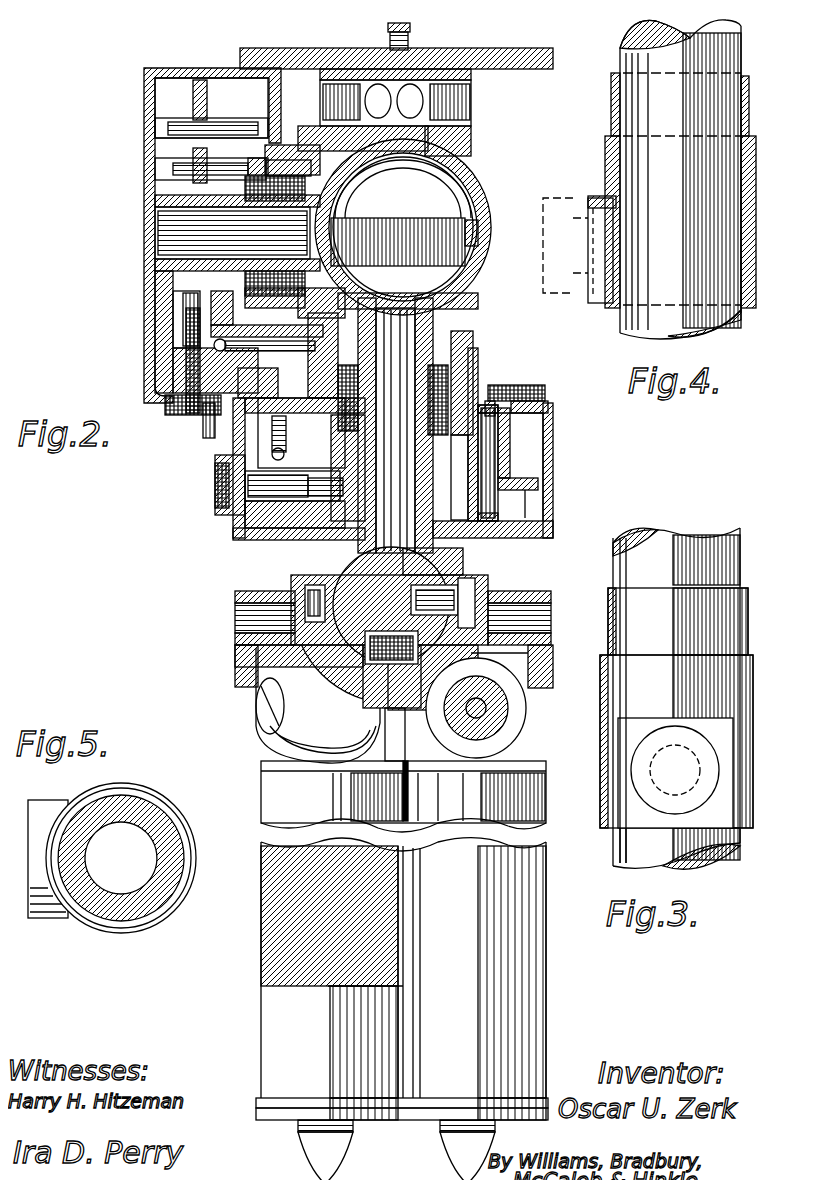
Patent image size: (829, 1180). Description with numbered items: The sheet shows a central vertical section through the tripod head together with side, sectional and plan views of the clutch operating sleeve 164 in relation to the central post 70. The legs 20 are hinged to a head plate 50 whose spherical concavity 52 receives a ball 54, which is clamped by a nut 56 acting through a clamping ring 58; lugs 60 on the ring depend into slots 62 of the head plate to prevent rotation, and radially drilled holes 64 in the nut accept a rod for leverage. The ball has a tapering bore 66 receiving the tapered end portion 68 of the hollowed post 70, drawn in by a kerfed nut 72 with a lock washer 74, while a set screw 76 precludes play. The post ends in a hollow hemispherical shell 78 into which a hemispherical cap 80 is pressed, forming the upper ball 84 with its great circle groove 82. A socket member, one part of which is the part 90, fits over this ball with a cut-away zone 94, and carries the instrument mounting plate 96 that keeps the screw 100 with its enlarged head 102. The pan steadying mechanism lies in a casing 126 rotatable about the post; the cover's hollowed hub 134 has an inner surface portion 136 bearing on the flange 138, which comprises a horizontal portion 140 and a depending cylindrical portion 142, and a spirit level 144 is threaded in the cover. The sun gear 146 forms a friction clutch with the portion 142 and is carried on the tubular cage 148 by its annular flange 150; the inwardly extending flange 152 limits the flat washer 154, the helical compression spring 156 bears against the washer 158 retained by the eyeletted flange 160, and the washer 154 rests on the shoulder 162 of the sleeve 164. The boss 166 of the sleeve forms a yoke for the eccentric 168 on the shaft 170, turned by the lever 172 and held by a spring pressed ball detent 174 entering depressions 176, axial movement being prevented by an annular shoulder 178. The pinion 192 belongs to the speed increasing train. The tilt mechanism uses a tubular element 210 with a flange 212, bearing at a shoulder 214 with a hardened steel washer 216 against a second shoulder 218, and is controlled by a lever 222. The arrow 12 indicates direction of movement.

In FIG. 2, the direction arrow 12 is at (235, 35).
In FIG. 2, the legs 20 is at (253, 972).
In FIG. 2, the head plate 50 is at (330, 650).
In FIG. 2, the spherical concavity 52 is at (480, 588).
In FIG. 2, the ball 54 is at (300, 575).
In FIG. 2, the nut 56 is at (225, 655).
In FIG. 2, the clamping ring 58 is at (462, 575).
In FIG. 2, the lugs 60 is at (300, 590).
In FIG. 2, the slots 62 is at (235, 612).
In FIG. 2, the radially drilled holes 64 is at (232, 595).
In FIG. 2, the tapering bore 66 is at (345, 570).
In FIG. 2, the tapered end portion 68 is at (430, 555).
In FIG. 2, the hollowed post 70 is at (440, 320).
In FIG. 2, the kerfed nut 72 is at (335, 670).
In FIG. 2, the lock washer 74 is at (340, 660).
In FIG. 2, the set screw 76 is at (462, 570).
In FIG. 2, the hollow hemispherical shell 78 is at (410, 300).
In FIG. 2, the hemispherical hollow cap 80 is at (400, 196).
In FIG. 2, the great circle groove 82 is at (476, 220).
In FIG. 2, the ball 84 is at (455, 188).
In FIG. 2, the socket member part 90 is at (440, 140).
In FIG. 2, the cut-away zone 94 is at (452, 215).
In FIG. 2, the instrument mounting plate 96 is at (500, 42).
In FIG. 2, the screw 100 is at (403, 30).
In FIG. 2, the enlarged head 102 is at (463, 78).
In FIG. 2, the casing 126 is at (548, 475).
In FIG. 2, the hollowed hub 134 is at (467, 345).
In FIG. 2, the inner surface portion 136 is at (475, 365).
In FIG. 2, the flange 138 is at (500, 368).
In FIG. 2, the horizontal portion 140 is at (455, 332).
In FIG. 2, the depending cylindrical portion 142 is at (490, 368).
In FIG. 2, the spirit level 144 is at (540, 390).
In FIG. 2, the sun gear 146 is at (318, 395).
In FIG. 2, the tubular cage 148 is at (330, 430).
In FIG. 2, the outwardly extending annular flange 150 is at (300, 425).
In FIG. 2, the inwardly extending flange 152 is at (484, 440).
In FIG. 2, the flat washer 154 is at (545, 415).
In FIG. 2, the helical compression spring 156 is at (330, 375).
In FIG. 2, the washer 158 is at (305, 345).
In FIG. 2, the eyeletted flange 160 is at (305, 325).
In FIG. 4, the shoulder 162 is at (600, 130).
In FIG. 3, the shoulder 162 is at (598, 648).
In FIG. 5, the shoulder 162 is at (78, 912).
In FIG. 4, the sleeve 164 is at (608, 95).
In FIG. 3, the sleeve 164 is at (625, 610).
In FIG. 5, the sleeve 164 is at (130, 790).
In FIG. 4, the boss 166 is at (596, 188).
In FIG. 5, the boss 166 is at (32, 815).
In FIG. 2, the eccentric 168 is at (165, 286).
In FIG. 4, the eccentric 168 is at (592, 298).
In FIG. 3, the eccentric 168 is at (642, 795).
In FIG. 2, the shaft 170 is at (178, 318).
In FIG. 2, the lever 172 is at (215, 508).
In FIG. 2, the spring pressed ball detent 174 is at (230, 437).
In FIG. 2, the depressions 176 is at (183, 337).
In FIG. 2, the annular shoulder 178 is at (260, 518).
In FIG. 2, the pinion 192 is at (507, 460).
In FIG. 2, the tubular element 210 is at (162, 222).
In FIG. 2, the flange 212 is at (278, 160).
In FIG. 2, the shoulder 214 is at (288, 252).
In FIG. 2, the hardened steel washer 216 is at (290, 158).
In FIG. 2, the second shoulder 218 is at (356, 283).
In FIG. 2, the lever 222 is at (170, 398).